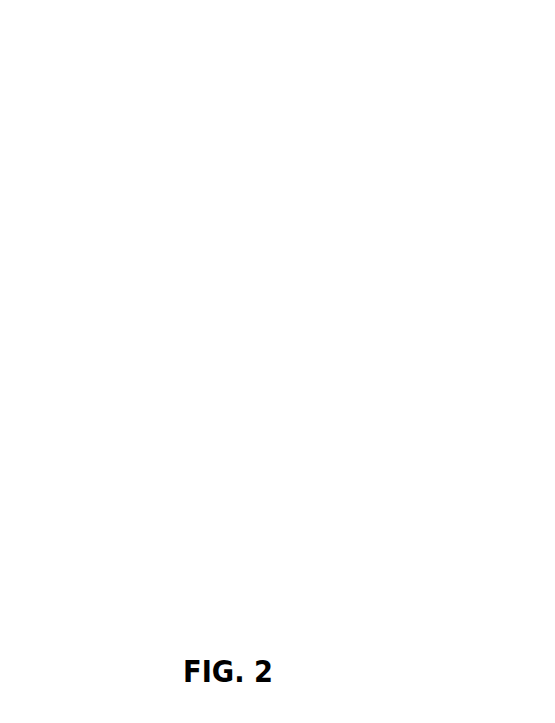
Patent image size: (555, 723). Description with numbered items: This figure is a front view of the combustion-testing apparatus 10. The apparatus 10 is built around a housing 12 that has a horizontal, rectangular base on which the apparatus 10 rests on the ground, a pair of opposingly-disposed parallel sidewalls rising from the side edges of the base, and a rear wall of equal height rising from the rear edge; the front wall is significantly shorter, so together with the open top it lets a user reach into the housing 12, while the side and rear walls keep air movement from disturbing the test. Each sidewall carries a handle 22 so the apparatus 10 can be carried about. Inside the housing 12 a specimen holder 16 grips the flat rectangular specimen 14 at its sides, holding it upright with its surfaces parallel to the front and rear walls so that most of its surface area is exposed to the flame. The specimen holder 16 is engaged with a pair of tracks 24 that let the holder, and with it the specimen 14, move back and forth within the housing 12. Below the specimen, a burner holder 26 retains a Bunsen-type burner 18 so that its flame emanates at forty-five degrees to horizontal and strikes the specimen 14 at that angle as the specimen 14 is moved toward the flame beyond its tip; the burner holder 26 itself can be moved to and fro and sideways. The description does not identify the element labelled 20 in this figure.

The apparatus 10 is at (364, 54).
The housing 12 is at (178, 98).
The specimen 14 is at (222, 278).
The specimen holder 16 is at (350, 382).
The burner 18 is at (227, 430).
The feet 20 is at (397, 574).
The handle 22 is at (419, 141).
The tracks 24 is at (372, 472).
The burner holder 26 is at (213, 492).